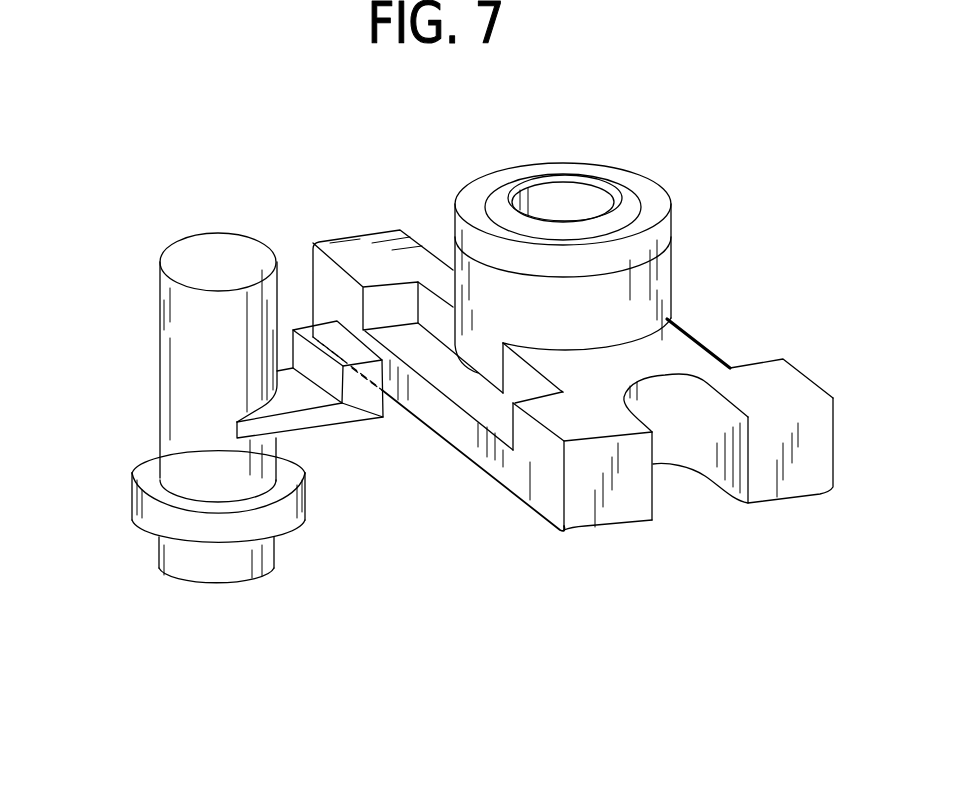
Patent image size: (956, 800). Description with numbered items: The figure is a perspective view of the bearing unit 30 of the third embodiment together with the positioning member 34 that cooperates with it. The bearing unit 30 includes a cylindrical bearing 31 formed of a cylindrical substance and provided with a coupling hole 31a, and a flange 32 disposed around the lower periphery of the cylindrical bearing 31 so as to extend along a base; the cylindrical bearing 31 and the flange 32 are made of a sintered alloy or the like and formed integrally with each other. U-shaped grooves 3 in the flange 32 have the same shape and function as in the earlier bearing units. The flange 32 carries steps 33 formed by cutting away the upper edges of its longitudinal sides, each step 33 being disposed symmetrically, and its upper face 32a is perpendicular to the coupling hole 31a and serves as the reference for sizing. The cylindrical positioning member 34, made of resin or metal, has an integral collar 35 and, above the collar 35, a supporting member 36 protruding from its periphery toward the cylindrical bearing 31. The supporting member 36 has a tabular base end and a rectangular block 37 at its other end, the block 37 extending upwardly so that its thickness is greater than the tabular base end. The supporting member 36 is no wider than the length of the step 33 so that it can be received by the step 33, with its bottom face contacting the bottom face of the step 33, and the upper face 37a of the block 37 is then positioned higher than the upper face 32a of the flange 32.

The U-shaped groove 3 is at (442, 237).
The bearing unit 30 is at (688, 176).
The cylindrical bearing 31 is at (660, 276).
The coupling hole 31a is at (574, 190).
The flange 32 is at (793, 473).
The upper face 32a is at (573, 423).
The step 33 is at (712, 352).
The positioning member 34 is at (177, 333).
The collar 35 is at (153, 518).
The supporting member 36 is at (327, 418).
The rectangular block 37 is at (372, 406).
The upper face 37a is at (347, 345).